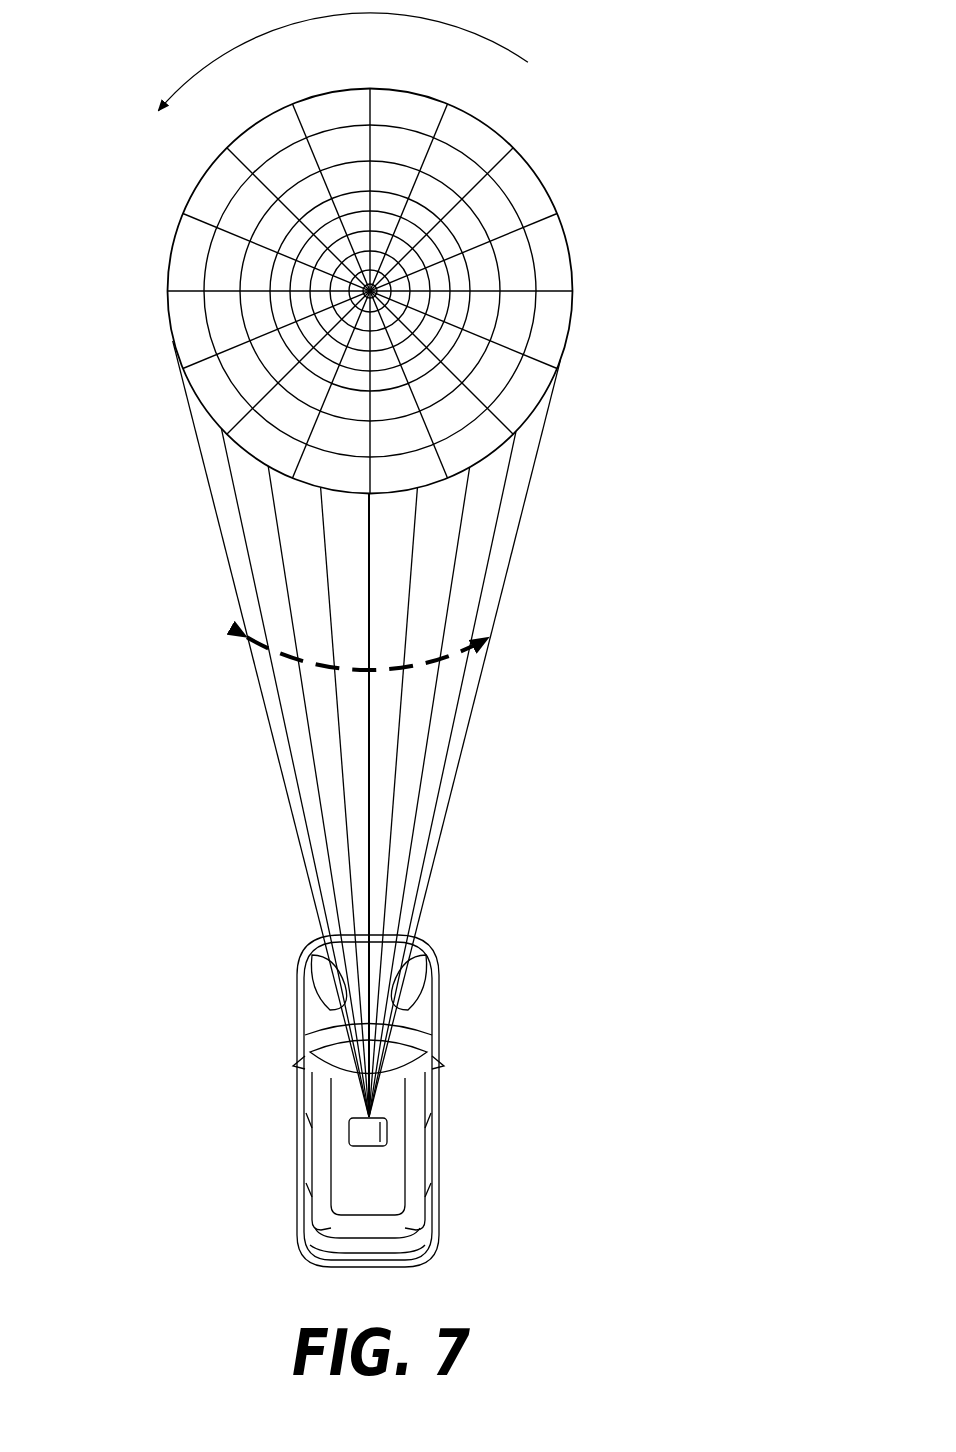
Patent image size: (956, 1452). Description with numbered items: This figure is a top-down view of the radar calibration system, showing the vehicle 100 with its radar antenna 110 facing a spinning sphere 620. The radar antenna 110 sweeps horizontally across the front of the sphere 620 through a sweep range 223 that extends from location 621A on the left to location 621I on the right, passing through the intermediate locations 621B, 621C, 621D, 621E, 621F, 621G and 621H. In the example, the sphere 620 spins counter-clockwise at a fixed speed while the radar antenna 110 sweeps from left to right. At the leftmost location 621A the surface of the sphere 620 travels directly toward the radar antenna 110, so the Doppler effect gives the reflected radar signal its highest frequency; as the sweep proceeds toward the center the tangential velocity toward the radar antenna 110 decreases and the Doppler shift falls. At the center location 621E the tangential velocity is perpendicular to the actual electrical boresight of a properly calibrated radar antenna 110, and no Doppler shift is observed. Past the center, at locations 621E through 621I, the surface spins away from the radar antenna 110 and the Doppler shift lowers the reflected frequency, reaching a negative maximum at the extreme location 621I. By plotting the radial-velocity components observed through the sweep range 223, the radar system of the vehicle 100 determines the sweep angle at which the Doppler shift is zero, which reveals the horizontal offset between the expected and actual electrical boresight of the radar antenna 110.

The sphere 620 is at (500, 285).
The location 621A is at (167, 357).
The location 621B is at (222, 437).
The location 621C is at (268, 470).
The location 621D is at (319, 493).
The location 621E is at (373, 498).
The location 621F is at (423, 489).
The location 621G is at (472, 471).
The location 621H is at (518, 438).
The location 621I is at (564, 357).
The sweep range 223 is at (456, 666).
The radar antenna 110 is at (387, 1133).
The vehicle 100 is at (437, 1206).